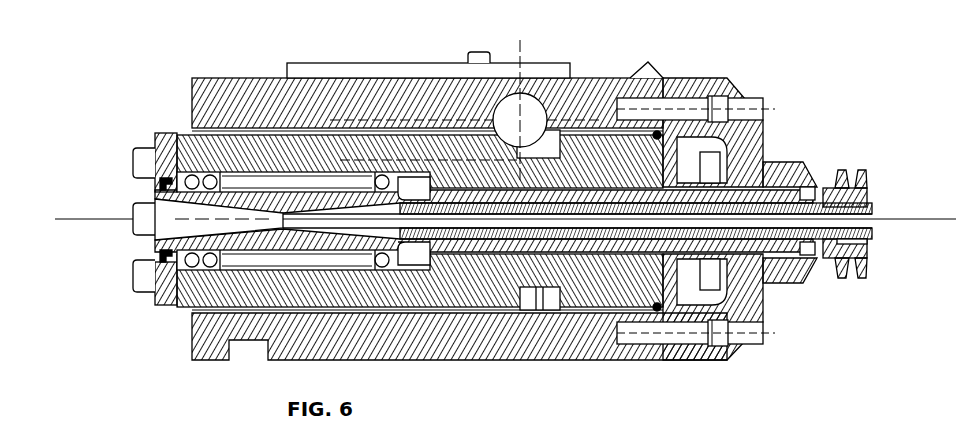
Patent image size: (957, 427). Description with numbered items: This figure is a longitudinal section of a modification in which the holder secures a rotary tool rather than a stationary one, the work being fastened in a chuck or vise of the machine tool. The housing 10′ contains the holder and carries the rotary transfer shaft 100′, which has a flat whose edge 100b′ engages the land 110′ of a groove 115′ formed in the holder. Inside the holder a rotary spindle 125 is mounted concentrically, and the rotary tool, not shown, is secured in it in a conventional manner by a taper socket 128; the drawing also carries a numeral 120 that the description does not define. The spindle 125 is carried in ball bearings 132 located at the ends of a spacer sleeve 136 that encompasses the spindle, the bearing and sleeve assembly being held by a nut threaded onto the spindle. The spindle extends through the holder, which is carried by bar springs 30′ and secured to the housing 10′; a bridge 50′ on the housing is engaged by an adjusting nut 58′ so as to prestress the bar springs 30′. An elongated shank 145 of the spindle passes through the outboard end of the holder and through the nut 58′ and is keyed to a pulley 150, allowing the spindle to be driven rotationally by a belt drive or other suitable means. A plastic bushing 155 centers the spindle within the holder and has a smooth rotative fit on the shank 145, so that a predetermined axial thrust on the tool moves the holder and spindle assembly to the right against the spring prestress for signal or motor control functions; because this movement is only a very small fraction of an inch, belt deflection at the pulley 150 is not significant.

The housing 10′ is at (592, 83).
The bar springs 30′ is at (157, 136).
The bridge 50′ is at (748, 130).
The adjusting nut 58′ is at (800, 172).
The rotary transfer shaft 100′ is at (535, 112).
The edge 100b′ is at (497, 128).
The land 110′ is at (528, 288).
The groove 115′ is at (548, 290).
The quill 120 is at (200, 290).
The rotary spindle 125 is at (160, 184).
The taper socket 128 is at (165, 228).
The ball bearings 132 is at (268, 258).
The spacer sleeve 136 is at (302, 187).
The elongated shank 145 is at (870, 212).
The pulley 150 is at (862, 178).
The plastic bushing 155 is at (807, 255).